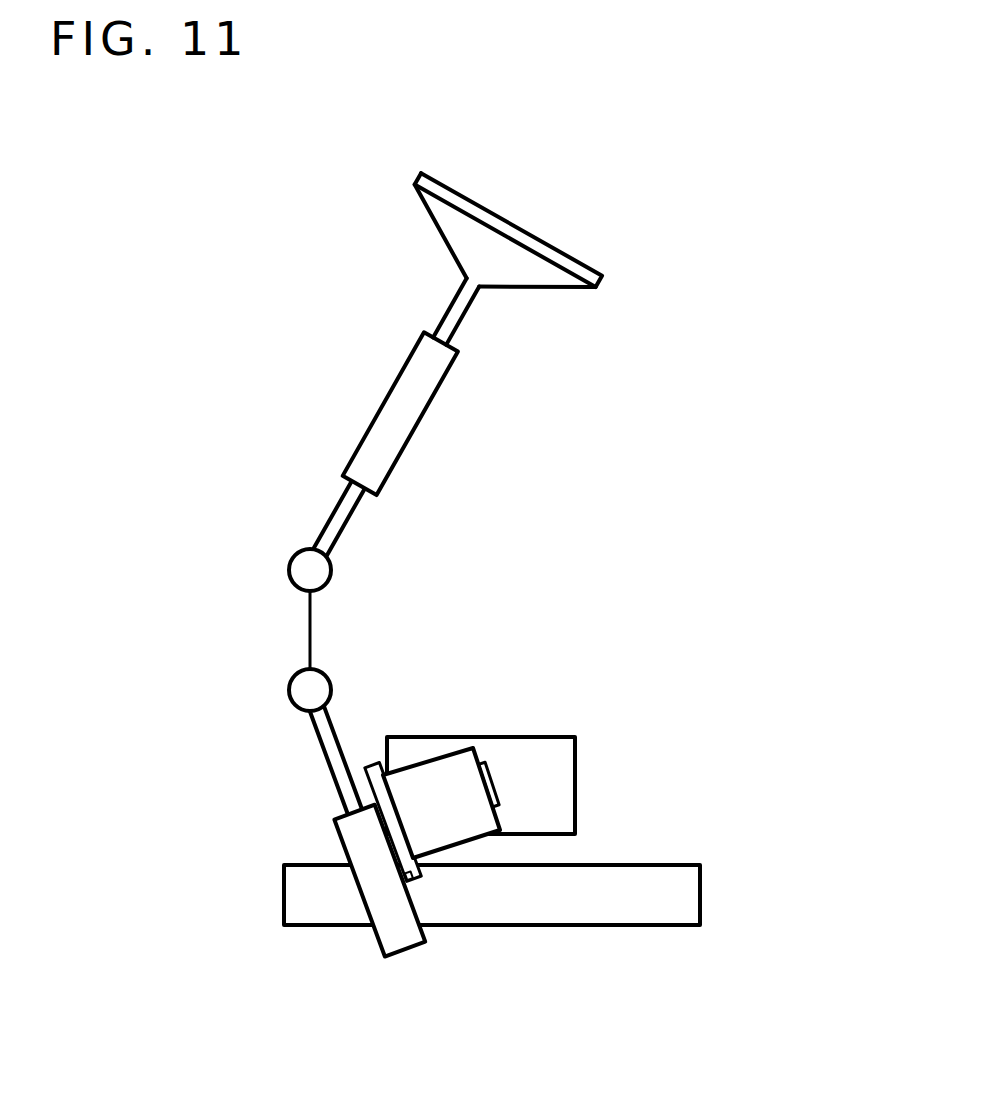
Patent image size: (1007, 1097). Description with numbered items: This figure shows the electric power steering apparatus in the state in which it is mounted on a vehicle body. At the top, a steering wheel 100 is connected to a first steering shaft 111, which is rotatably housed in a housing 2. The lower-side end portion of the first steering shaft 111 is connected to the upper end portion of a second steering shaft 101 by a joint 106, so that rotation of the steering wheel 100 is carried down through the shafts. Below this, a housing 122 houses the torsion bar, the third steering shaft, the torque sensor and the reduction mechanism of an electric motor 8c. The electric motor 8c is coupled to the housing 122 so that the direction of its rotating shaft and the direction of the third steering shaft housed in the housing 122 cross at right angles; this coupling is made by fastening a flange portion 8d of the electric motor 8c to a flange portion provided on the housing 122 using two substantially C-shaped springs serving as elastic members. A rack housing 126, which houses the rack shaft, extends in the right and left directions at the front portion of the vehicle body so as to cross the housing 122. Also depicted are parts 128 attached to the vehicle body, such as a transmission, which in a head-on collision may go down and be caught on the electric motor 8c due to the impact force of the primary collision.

The steering wheel 100 is at (540, 237).
The first steering shaft 111 is at (473, 317).
The housing 2 is at (430, 422).
The joint 106 is at (310, 627).
The second steering shaft 101 is at (325, 757).
The housing 122 is at (342, 843).
The electric motor 8c is at (423, 772).
The flange portion 8d is at (420, 878).
The parts attached to the vehicle body 128 is at (570, 776).
The rack housing 126 is at (687, 897).